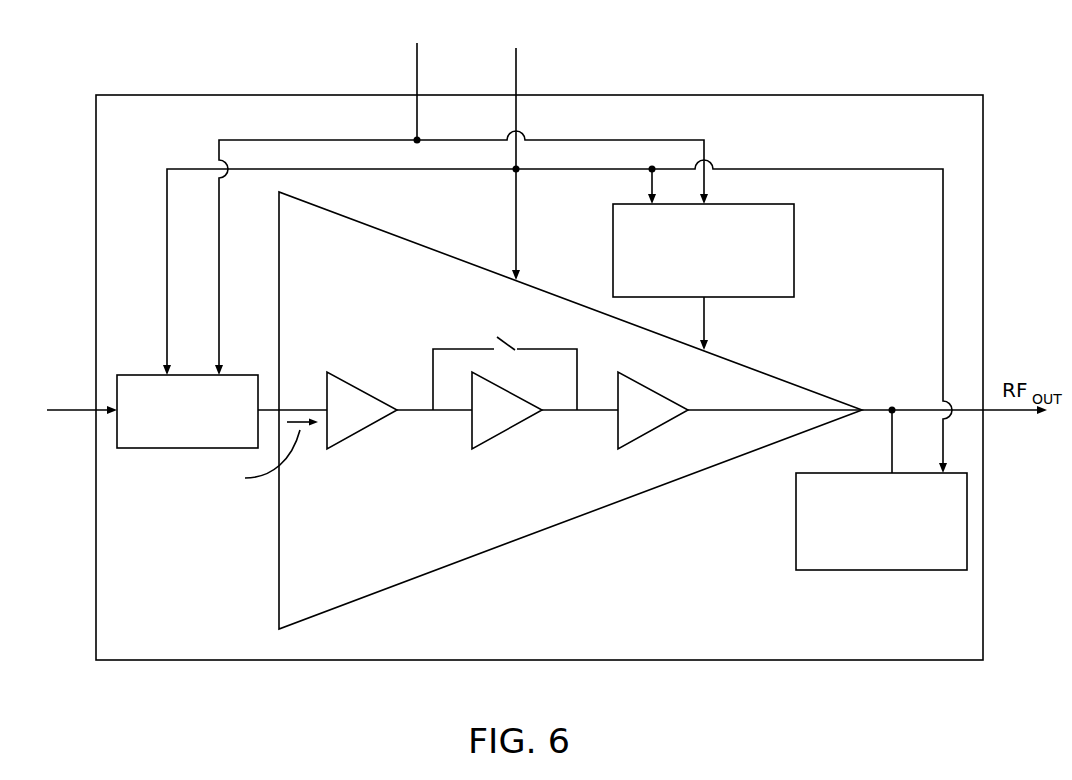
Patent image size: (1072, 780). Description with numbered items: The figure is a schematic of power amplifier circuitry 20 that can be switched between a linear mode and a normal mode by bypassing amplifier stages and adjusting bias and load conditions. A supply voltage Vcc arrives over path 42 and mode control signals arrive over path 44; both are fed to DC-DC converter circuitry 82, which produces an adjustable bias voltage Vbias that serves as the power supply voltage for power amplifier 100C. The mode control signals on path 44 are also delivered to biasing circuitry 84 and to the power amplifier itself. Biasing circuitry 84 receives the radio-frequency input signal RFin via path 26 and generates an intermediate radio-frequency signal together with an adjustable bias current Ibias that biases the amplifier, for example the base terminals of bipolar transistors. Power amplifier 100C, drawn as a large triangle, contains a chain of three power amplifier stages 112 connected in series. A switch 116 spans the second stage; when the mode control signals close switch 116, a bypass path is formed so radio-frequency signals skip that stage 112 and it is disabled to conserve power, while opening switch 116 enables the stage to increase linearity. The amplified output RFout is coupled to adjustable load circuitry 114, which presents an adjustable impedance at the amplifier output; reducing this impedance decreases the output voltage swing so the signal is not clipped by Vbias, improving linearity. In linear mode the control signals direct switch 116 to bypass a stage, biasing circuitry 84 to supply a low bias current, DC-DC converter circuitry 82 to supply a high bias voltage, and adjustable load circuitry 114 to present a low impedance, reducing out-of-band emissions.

The power amplifier circuitry 20 is at (792, 95).
The path 42 is at (418, 58).
The path 44 is at (517, 60).
The path 26 is at (78, 415).
The biasing circuitry 84 is at (234, 374).
The power amplifier 100C is at (617, 503).
The power amplifier stage 112 is at (360, 430).
The switch 116 is at (504, 338).
The DC-DC converter circuitry 82 is at (794, 237).
The adjustable load circuitry 114 is at (796, 538).